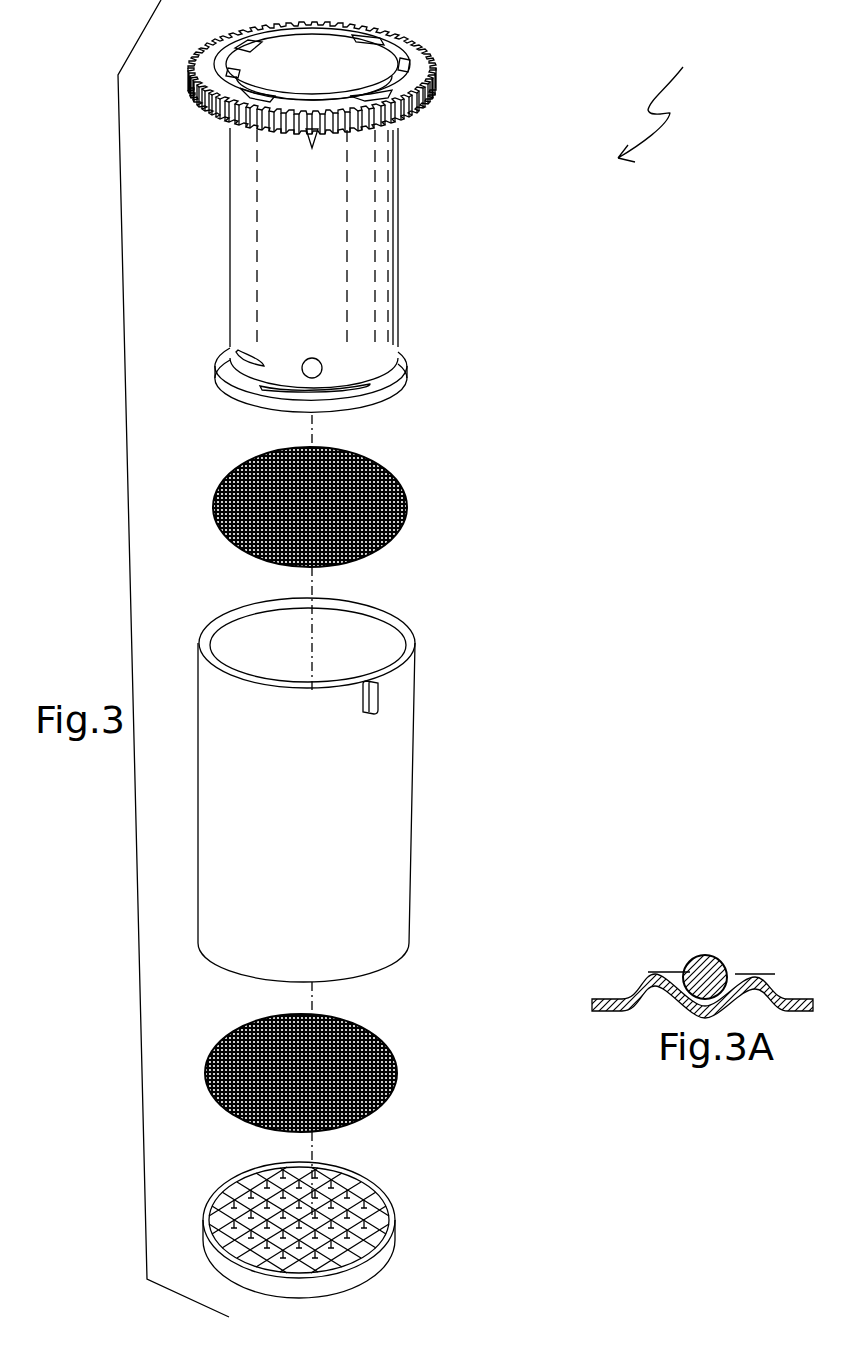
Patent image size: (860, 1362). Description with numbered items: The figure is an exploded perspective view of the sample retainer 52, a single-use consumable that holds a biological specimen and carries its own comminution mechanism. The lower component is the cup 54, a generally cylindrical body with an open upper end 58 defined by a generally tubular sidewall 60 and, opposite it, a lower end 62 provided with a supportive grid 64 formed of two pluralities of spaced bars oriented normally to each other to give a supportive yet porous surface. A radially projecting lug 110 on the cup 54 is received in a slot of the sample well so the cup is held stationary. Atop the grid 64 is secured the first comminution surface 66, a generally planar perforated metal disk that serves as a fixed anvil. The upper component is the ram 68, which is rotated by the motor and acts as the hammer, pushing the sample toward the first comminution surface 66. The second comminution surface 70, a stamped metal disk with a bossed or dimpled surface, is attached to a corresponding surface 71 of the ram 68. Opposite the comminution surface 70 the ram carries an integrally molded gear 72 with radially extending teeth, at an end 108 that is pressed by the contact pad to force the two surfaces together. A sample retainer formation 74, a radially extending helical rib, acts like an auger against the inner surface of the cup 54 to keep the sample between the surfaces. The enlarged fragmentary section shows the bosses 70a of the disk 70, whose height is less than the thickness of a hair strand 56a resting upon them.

In FIG. 3, the sample retainer 52 is at (664, 102).
In FIG. 3, the end of the ram 108 is at (397, 33).
In FIG. 3, the gear 72 is at (427, 70).
In FIG. 3, the ram 68 is at (393, 227).
In FIG. 3, the sample retainer formation 74 is at (395, 342).
In FIG. 3, the corresponding surface of the ram 71 is at (395, 398).
In FIG. 3, the second comminution surface 70 is at (405, 492).
In FIG. 3A, the second comminution surface 70 is at (622, 1018).
In FIG. 3, the open upper end 58 is at (387, 632).
In FIG. 3, the radially projecting lug 110 is at (375, 700).
In FIG. 3, the sidewall 60 is at (400, 722).
In FIG. 3, the cup 54 is at (387, 823).
In FIG. 3, the lower end 62 is at (405, 945).
In FIG. 3, the first comminution surface 66 is at (395, 1062).
In FIG. 3, the grid 64 is at (395, 1202).
In FIG. 3A, the hair strand 56a is at (705, 955).
In FIG. 3A, the bosses 70a is at (771, 975).